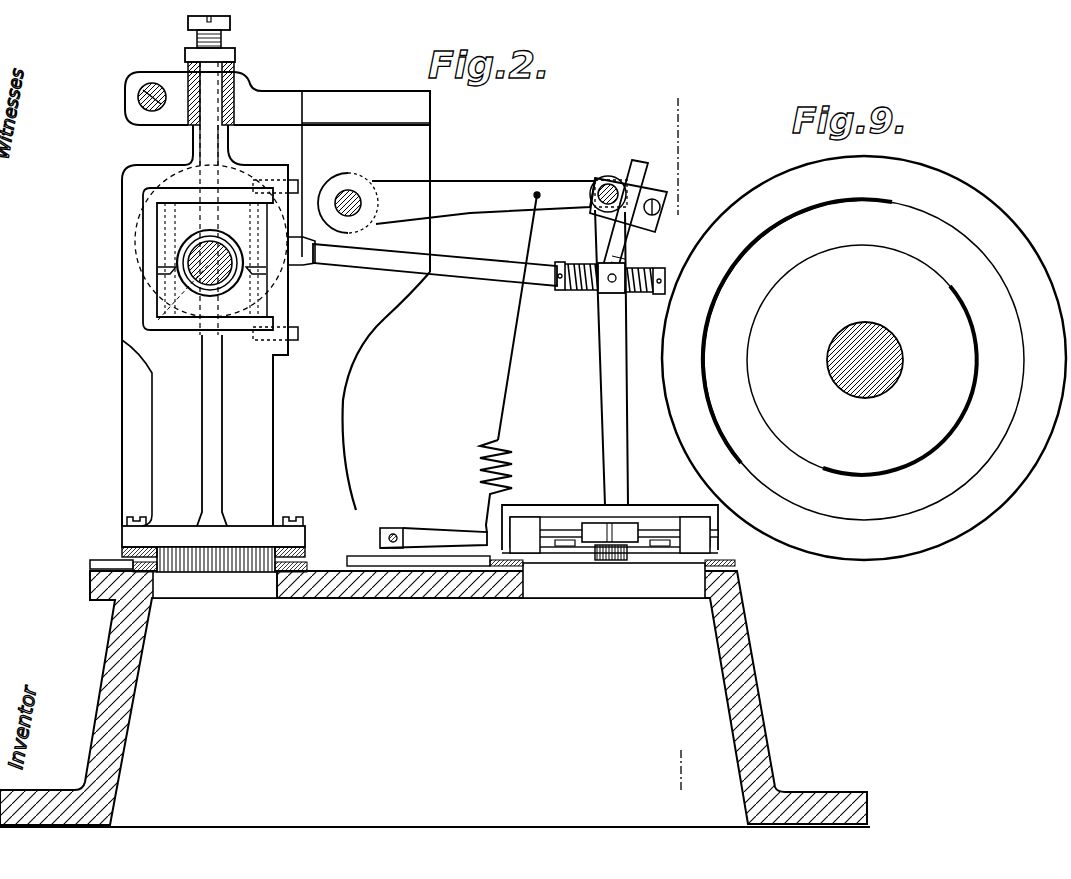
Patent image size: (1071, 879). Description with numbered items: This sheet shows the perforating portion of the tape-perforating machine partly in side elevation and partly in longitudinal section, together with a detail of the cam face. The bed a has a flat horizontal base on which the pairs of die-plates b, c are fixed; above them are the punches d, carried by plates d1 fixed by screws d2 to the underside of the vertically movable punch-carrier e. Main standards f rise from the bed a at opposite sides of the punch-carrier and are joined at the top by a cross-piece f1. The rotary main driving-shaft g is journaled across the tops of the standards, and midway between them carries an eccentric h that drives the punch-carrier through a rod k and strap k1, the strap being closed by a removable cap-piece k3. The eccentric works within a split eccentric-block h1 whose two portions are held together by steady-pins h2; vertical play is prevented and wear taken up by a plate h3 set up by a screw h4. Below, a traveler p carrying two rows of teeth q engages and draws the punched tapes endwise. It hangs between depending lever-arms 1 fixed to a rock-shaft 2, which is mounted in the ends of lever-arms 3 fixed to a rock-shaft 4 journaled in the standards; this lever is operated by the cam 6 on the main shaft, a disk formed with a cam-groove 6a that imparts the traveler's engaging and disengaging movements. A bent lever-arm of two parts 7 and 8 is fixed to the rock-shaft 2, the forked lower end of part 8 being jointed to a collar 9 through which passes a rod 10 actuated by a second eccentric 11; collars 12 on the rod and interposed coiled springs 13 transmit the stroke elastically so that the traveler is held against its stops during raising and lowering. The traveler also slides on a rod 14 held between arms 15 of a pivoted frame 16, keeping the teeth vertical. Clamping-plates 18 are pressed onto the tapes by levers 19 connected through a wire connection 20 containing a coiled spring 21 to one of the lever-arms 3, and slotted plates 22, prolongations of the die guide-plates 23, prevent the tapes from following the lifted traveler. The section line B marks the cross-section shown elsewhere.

In FIG. 2, the bed a is at (389, 588).
In FIG. 2, the die-plate b is at (91, 582).
In FIG. 2, the die-plate c is at (120, 560).
In FIG. 2, the punches d is at (213, 566).
In FIG. 2, the punch plates d1 is at (303, 546).
In FIG. 2, the screws d2 is at (128, 520).
In FIG. 2, the punch-carrier e is at (213, 538).
In FIG. 2, the main standards f is at (378, 391).
In FIG. 2, the cross-piece f1 is at (277, 172).
In FIG. 2, the rod k is at (210, 325).
In FIG. 2, the strap k1 is at (143, 217).
In FIG. 2, the cap-piece k3 is at (280, 308).
In FIG. 2, the eccentric h is at (192, 293).
In FIG. 2, the split eccentric-block h1 is at (240, 297).
In FIG. 2, the steady-pins h2 is at (200, 133).
In FIG. 2, the plate h3 is at (198, 218).
In FIG. 2, the screw h4 is at (222, 40).
In FIG. 2, the eccentric 11 is at (262, 175).
In FIG. 2, the lever-arms 1 is at (608, 392).
In FIG. 2, the rock-shaft 2 is at (595, 205).
In FIG. 2, the lever-arms 3 is at (483, 202).
In FIG. 2, the rock-shaft 4 is at (352, 194).
In FIG. 2, the bent lever-arm part 7 is at (629, 195).
In FIG. 2, the bent lever-arm part 8 is at (627, 237).
In FIG. 2, the collar 9 is at (612, 296).
In FIG. 2, the rod 10 is at (468, 282).
In FIG. 2, the collars 12 is at (560, 291).
In FIG. 2, the coiled springs 13 is at (586, 268).
In FIG. 2, the pin or rod 14 is at (614, 524).
In FIG. 2, the arms 15 is at (502, 549).
In FIG. 2, the frame 16 is at (663, 509).
In FIG. 2, the clamping-plates 18 is at (380, 540).
In FIG. 2, the lever 19 is at (420, 538).
In FIG. 2, the wire connection 20 is at (503, 362).
In FIG. 2, the coiled spring 21 is at (515, 480).
In FIG. 2, the slotted plates 22 is at (530, 566).
In FIG. 2, the guide-plates 23 is at (291, 576).
In FIG. 2, the traveler p is at (638, 532).
In FIG. 2, the teeth or pins q is at (610, 561).
In FIG. 2, the section line B is at (679, 453).
In FIG. 9, the cam 6 is at (770, 375).
In FIG. 9, the cam-groove 6a is at (863, 359).
In FIG. 9, the main driving-shaft g is at (865, 352).